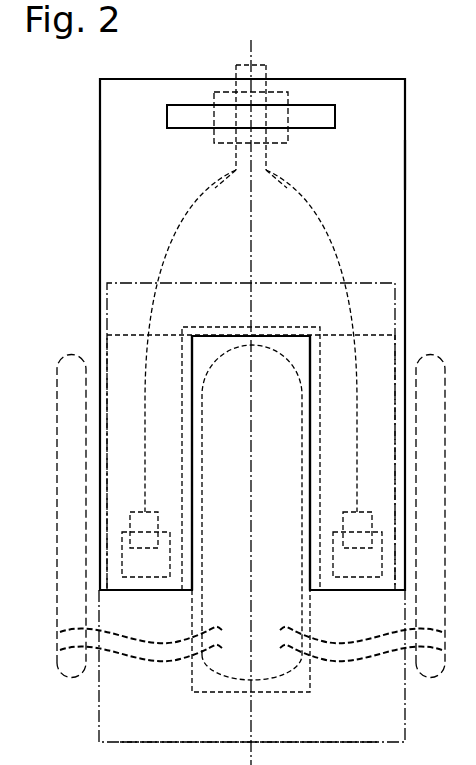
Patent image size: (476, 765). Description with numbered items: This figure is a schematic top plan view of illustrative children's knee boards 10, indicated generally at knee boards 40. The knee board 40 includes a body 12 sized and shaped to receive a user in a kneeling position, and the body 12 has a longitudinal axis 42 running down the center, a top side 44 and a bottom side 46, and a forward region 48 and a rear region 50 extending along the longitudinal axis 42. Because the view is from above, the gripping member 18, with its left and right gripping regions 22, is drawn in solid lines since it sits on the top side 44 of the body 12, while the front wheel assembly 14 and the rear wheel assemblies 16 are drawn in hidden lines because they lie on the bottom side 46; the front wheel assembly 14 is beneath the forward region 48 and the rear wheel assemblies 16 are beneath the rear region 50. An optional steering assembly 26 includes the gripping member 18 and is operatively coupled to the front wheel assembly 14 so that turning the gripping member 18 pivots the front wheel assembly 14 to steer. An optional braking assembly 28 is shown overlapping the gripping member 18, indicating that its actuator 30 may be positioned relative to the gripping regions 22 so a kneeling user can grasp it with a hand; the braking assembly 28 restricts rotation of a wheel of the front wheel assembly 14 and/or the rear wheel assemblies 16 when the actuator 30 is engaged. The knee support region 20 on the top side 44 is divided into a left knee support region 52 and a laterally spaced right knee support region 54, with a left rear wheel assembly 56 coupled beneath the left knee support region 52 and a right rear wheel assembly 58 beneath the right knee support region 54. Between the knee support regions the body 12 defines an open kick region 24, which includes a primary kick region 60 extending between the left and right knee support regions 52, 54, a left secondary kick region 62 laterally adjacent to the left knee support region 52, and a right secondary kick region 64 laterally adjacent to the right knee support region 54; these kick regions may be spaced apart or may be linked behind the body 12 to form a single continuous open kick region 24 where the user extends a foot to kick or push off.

The knee board 10 is at (60, 80).
The body 12 is at (412, 105).
The front wheel assembly 14 is at (278, 92).
The rear wheel assembly 16 is at (334, 547).
The gripping member 18 is at (317, 106).
The knee support region 20 is at (208, 281).
The gripping regions 22 is at (195, 123).
The open kick region 24 is at (224, 350).
The steering assembly 26 is at (227, 67).
The braking assembly 28 is at (262, 65).
The actuator 30 is at (238, 155).
The knee board 40 is at (70, 128).
The longitudinal axis 42 is at (268, 764).
The top side 44 is at (346, 198).
The bottom side 46 is at (98, 162).
The forward region 48 is at (408, 163).
The rear region 50 is at (410, 537).
The left knee support region 52 is at (141, 473).
The right knee support region 54 is at (355, 473).
The left rear wheel assembly 56 is at (170, 571).
The right rear wheel assembly 58 is at (334, 571).
The primary kick region 60 is at (311, 347).
The left secondary kick region 62 is at (56, 405).
The right secondary kick region 64 is at (440, 356).